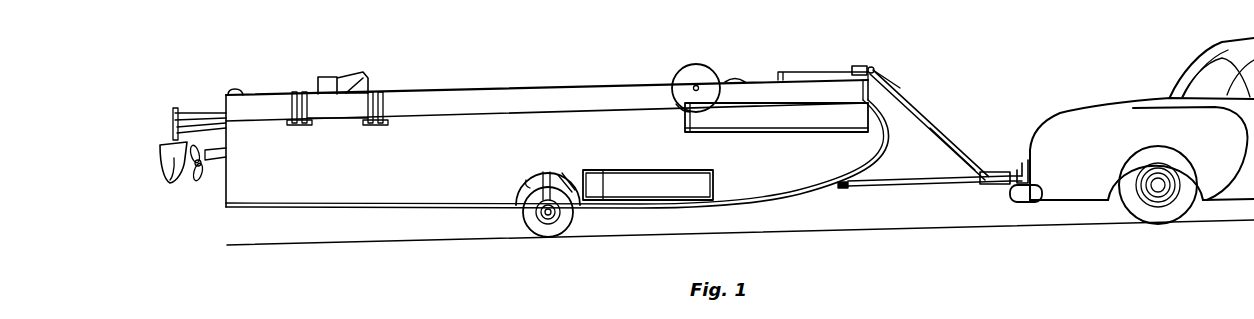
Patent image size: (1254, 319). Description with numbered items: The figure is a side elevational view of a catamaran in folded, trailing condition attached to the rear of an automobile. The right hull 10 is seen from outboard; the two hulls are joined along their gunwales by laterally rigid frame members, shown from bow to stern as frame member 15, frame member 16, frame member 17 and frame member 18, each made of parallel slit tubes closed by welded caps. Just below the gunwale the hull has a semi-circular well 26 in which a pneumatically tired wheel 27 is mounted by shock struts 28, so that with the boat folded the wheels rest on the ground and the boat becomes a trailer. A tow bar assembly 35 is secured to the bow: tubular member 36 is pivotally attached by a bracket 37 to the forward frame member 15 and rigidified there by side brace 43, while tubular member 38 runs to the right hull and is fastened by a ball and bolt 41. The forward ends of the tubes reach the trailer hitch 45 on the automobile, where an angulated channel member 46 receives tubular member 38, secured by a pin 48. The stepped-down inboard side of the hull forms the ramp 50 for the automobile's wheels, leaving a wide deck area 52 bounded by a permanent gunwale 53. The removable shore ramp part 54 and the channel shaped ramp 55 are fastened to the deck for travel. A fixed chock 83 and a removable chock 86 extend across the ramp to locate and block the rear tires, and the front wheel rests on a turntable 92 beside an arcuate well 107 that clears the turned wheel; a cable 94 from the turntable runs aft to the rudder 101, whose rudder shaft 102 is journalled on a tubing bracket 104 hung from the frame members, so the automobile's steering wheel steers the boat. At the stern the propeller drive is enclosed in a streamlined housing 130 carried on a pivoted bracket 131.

The hull 10 is at (557, 149).
The frame member 15 is at (853, 66).
The frame member 16 is at (738, 78).
The frame member 17 is at (367, 90).
The frame member 18 is at (240, 90).
The semi-circular well 26 is at (530, 177).
The pneumatically tired wheel 27 is at (532, 222).
The shock struts 28 is at (560, 180).
The tow bar assembly 35 is at (940, 130).
The tubular member 36 is at (917, 108).
The bracket 37 is at (873, 68).
The tubular member 38 is at (908, 183).
The ball and bolt 41 is at (842, 188).
The side brace 43 is at (874, 68).
The trailer hitch 45 is at (1023, 170).
The channel member 46 is at (967, 185).
The pin 48 is at (990, 188).
The ramp 50 is at (510, 102).
The deck area 52 is at (376, 154).
The gunwale 53 is at (437, 203).
The ramp part 54 is at (648, 185).
The channel shaped ramp 55 is at (776, 117).
The chock 83 is at (292, 107).
The chock 86 is at (383, 105).
The turntable 92 is at (703, 78).
The cable 94 is at (200, 115).
The rudder 101 is at (175, 175).
The rudder shaft 102 is at (178, 110).
The bracket 104 is at (212, 128).
The arcuate well 107 is at (667, 113).
The housing 130 is at (213, 163).
The bracket 131 is at (332, 72).